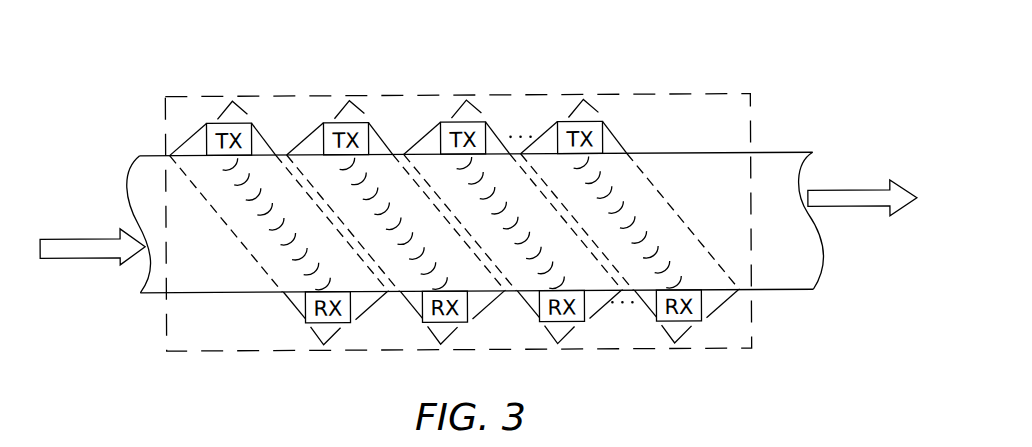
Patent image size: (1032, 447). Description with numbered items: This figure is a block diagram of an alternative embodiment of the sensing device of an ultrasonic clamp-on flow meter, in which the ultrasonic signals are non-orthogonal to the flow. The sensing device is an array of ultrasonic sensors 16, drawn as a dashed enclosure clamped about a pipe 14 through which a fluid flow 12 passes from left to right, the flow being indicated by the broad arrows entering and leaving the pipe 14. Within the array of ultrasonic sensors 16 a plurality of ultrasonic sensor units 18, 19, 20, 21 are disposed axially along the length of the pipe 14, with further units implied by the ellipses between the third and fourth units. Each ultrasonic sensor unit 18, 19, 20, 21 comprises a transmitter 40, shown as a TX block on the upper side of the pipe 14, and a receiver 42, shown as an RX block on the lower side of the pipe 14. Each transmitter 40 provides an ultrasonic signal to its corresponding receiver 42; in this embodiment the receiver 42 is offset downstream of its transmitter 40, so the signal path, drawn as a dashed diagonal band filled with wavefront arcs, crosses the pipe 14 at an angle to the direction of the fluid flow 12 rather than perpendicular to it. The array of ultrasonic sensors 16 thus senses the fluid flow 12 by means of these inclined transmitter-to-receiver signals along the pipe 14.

The fluid flow 12 is at (82, 237).
The pipe 14 is at (789, 154).
The array of ultrasonic sensors 16 is at (757, 103).
The ultrasonic sensor unit 18 is at (246, 108).
The ultrasonic sensor unit 19 is at (363, 108).
The ultrasonic sensor unit 20 is at (481, 103).
The ultrasonic sensor unit 21 is at (598, 103).
The transmitter 40 is at (219, 117).
The receiver 42 is at (424, 326).